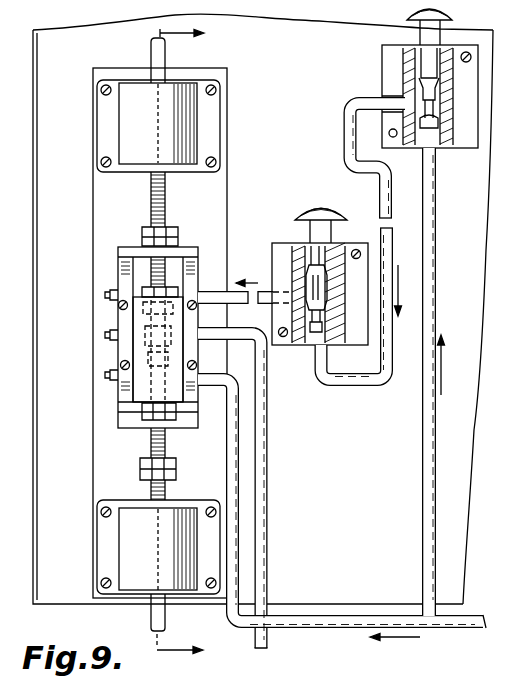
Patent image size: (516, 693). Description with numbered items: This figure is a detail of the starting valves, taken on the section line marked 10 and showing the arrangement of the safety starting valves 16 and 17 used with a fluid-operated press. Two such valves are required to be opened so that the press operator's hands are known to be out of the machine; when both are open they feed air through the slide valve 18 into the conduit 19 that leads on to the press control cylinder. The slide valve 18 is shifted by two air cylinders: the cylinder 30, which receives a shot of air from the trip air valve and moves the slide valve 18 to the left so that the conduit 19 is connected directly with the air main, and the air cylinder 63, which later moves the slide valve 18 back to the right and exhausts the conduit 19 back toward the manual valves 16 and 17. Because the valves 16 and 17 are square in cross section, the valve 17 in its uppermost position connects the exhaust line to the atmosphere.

The section line 10- 10 is at (198, 344).
The safety starting valve 16 is at (455, 13).
The safety starting valve 17 is at (322, 213).
The slide valve 18 is at (122, 389).
The conduit 19 is at (268, 394).
The cylinder 30 is at (190, 143).
The air cylinder 63 is at (130, 537).